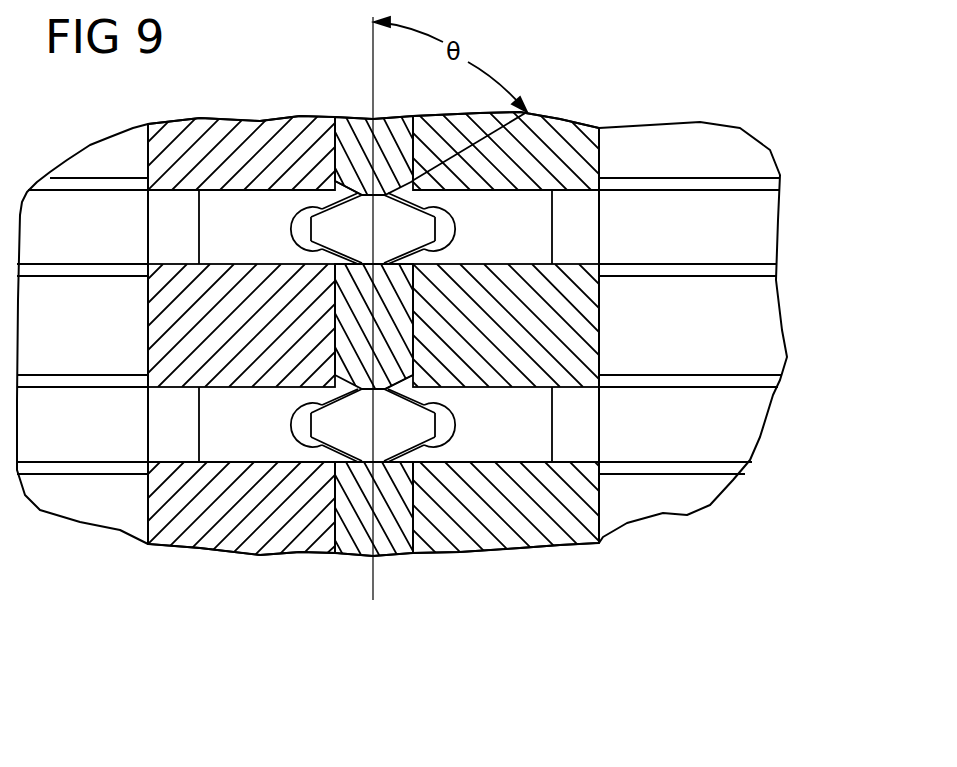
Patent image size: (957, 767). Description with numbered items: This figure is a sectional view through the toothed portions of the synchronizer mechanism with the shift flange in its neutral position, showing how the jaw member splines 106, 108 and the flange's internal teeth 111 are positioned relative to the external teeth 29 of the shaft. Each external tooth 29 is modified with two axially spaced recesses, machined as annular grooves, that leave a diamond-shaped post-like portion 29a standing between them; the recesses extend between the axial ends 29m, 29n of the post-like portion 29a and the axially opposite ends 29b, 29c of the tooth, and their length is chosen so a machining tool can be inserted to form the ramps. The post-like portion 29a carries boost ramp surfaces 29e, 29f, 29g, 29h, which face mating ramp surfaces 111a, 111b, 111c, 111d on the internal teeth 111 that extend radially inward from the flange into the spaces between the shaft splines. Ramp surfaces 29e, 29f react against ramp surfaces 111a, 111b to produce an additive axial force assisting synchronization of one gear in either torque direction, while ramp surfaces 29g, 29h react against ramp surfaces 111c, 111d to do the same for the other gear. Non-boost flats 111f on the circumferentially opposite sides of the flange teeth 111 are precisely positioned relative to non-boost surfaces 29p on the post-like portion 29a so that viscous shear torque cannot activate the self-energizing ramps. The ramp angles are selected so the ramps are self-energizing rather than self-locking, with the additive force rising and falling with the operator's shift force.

The external teeth 29 is at (786, 195).
The post-like portion 29a is at (342, 400).
The axial end of tooth 29b is at (150, 221).
The axial end of tooth 29c is at (598, 234).
The boost ramp surface 29e is at (428, 242).
The boost ramp surface 29f is at (430, 220).
The boost ramp surface 29g is at (316, 254).
The boost ramp surface 29h is at (322, 210).
The axial end of post portion 29m is at (299, 434).
The axial end of post portion 29n is at (442, 420).
The non-boost surface 29p is at (390, 383).
The jaw clutch spline 106 is at (134, 302).
The jaw clutch spline 108 is at (614, 326).
The internal teeth 111 is at (324, 527).
The ramp surface 111a is at (335, 264).
The ramp surface 111b is at (345, 186).
The ramp surface 111c is at (378, 378).
The ramp surface 111d is at (400, 466).
The non-boost surface 111f is at (340, 466).